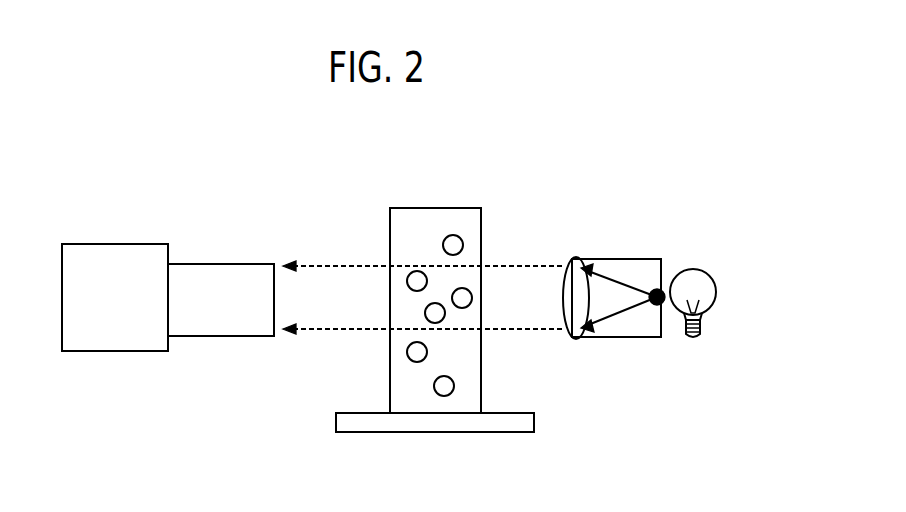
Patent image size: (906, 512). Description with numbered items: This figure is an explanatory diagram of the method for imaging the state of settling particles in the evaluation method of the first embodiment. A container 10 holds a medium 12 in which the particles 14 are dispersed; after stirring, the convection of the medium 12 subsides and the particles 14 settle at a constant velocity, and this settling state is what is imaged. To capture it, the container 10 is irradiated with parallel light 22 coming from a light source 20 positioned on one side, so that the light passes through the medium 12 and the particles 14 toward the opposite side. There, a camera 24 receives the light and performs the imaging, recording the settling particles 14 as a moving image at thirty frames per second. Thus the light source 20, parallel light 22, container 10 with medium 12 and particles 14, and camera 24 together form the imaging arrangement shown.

The container 10 is at (390, 228).
The medium 12 is at (415, 218).
The particles 14 is at (445, 386).
The light source 20 is at (715, 288).
The parallel light 22 is at (342, 333).
The camera 24 is at (110, 243).